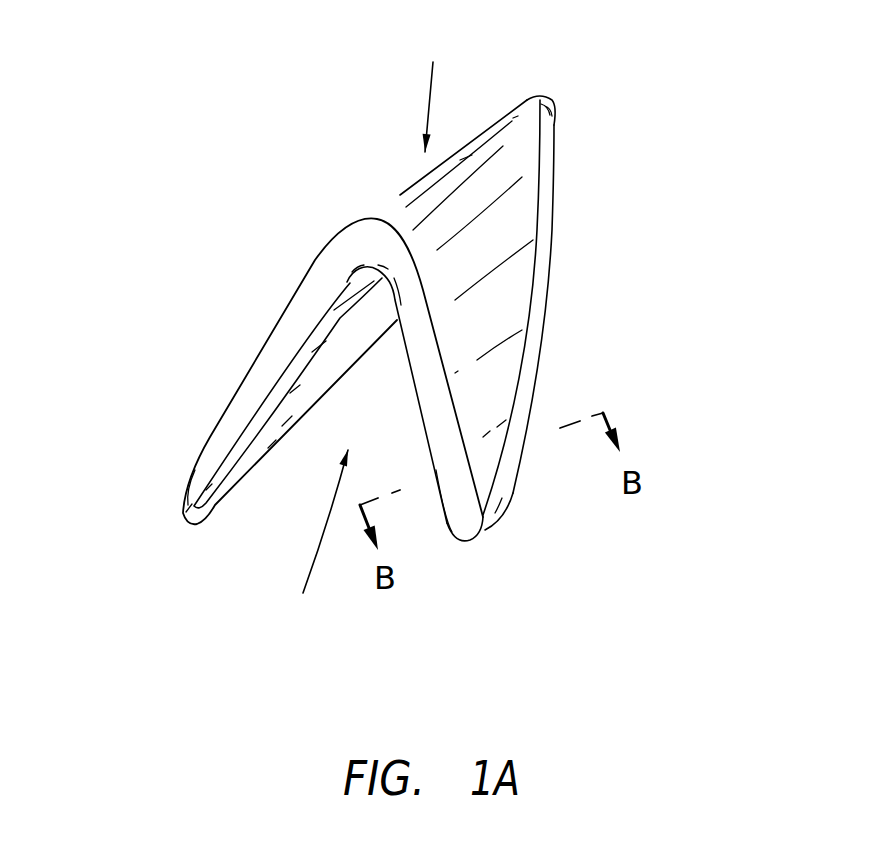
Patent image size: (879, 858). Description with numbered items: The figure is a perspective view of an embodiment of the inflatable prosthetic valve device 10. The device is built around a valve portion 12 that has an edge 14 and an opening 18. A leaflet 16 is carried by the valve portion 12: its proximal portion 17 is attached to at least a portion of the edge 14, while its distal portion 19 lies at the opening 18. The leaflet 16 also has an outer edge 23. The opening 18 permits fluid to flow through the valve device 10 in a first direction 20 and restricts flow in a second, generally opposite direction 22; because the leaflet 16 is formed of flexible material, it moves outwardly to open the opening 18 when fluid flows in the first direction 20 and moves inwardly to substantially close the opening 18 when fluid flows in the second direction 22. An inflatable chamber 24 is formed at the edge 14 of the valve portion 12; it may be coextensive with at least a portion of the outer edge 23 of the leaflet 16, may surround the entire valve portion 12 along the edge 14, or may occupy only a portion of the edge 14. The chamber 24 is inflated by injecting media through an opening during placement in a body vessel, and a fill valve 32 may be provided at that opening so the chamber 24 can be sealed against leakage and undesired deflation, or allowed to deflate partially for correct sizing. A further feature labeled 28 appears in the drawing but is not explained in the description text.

The prosthetic valve device 10 is at (600, 325).
The valve portion 12 is at (267, 337).
The edge 14 is at (470, 527).
The leaflet 16 is at (512, 183).
The proximal portion 17 is at (488, 415).
The opening 18 is at (407, 192).
The distal portion 19 is at (505, 140).
The first direction 20 is at (317, 570).
The second direction 22 is at (428, 103).
The outer edge 23 is at (507, 457).
The inflatable chamber 24 is at (220, 450).
The top edge 28 is at (472, 147).
The fill valve 32 is at (512, 502).